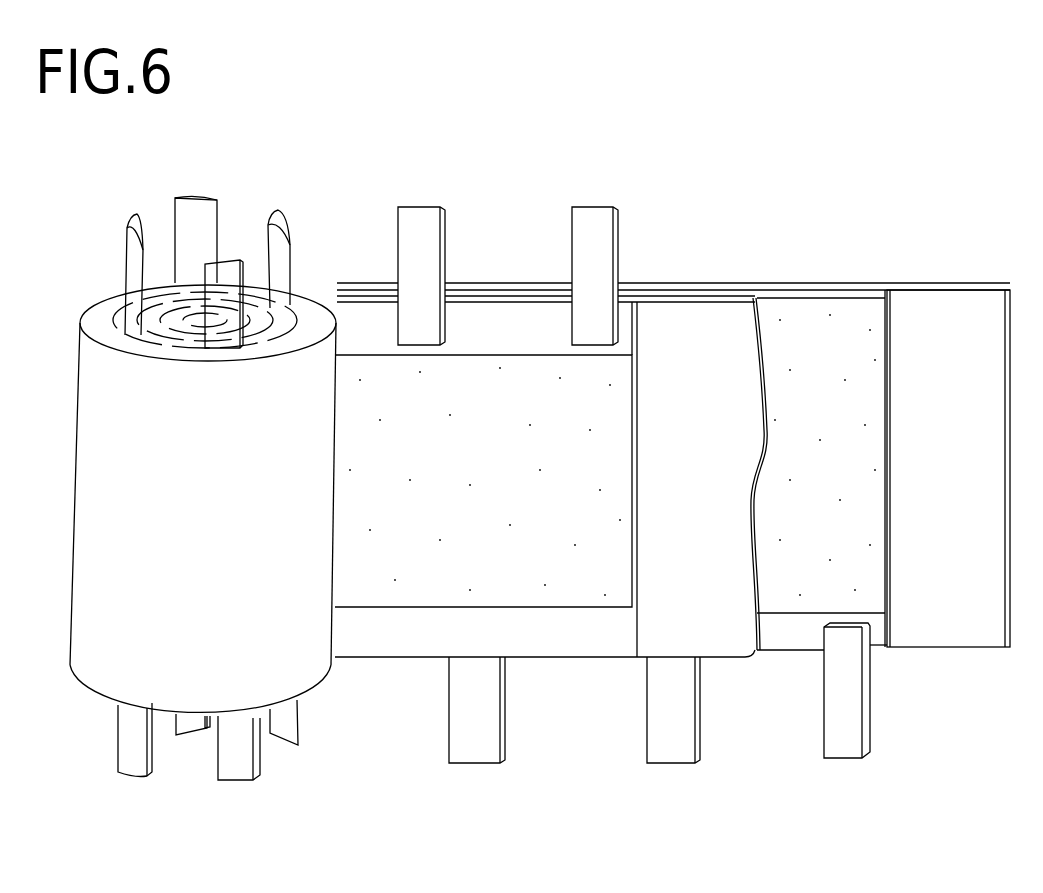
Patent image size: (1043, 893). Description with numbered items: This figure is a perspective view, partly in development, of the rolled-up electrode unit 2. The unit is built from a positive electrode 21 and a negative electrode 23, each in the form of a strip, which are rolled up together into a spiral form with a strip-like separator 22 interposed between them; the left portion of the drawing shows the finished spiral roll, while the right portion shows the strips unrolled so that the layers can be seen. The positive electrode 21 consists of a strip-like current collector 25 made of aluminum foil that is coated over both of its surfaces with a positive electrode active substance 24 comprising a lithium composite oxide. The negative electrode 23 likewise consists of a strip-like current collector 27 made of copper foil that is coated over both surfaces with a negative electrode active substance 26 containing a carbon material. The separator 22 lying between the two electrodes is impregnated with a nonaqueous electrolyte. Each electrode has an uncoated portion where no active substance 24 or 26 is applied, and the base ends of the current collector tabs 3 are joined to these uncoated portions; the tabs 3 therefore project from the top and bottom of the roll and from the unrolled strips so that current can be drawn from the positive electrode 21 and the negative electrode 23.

The rolled-up electrode unit 2 is at (92, 535).
The current collector tabs 3 is at (197, 217).
The positive electrode 21 is at (608, 400).
The separator 22 is at (745, 320).
The negative electrode 23 is at (835, 320).
The positive electrode active substance 24 is at (404, 590).
The current collector 25 is at (522, 325).
The negative electrode active substance 26 is at (860, 592).
The current collector 27 is at (793, 630).